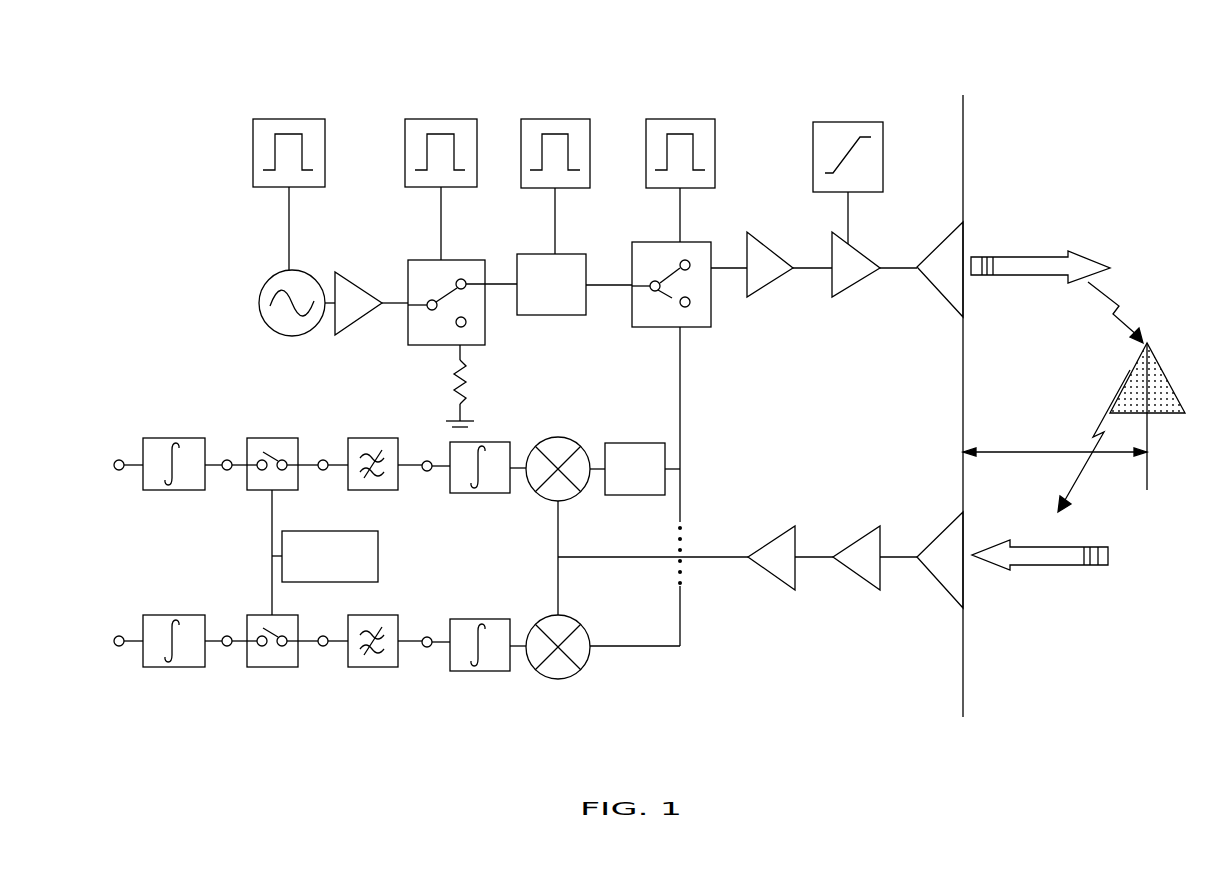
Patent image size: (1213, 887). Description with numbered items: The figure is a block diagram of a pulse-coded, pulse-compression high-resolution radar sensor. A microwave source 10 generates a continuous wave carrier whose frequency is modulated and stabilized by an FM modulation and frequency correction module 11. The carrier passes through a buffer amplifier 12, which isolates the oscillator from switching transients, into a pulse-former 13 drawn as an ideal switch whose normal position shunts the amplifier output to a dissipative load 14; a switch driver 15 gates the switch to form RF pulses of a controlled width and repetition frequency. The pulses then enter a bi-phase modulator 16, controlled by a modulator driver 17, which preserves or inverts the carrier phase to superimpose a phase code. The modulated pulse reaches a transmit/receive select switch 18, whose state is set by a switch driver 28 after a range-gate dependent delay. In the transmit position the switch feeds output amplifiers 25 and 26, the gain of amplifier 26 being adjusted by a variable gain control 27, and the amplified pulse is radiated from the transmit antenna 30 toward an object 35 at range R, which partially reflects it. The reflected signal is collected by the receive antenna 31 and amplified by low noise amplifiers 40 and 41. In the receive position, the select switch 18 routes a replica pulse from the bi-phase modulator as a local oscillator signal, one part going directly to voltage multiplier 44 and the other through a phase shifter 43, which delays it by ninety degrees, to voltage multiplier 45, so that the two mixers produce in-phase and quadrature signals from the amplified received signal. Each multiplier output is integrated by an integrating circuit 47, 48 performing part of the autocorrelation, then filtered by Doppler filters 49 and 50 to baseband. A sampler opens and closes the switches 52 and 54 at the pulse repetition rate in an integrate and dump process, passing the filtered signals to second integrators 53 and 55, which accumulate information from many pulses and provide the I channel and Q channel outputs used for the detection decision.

The microwave source 10 is at (258, 293).
The FM modulation and frequency correction module 11 is at (293, 118).
The buffer amplifier 12 is at (334, 324).
The pulse-former 13 is at (406, 284).
The dissipative load 14 is at (412, 346).
The switch driver 15 is at (445, 118).
The bi-phase modulator 16 is at (570, 316).
The modulator driver 17 is at (562, 118).
The transmit/receive select switch 18 is at (700, 328).
The output amplifier 25 is at (786, 262).
The output amplifier 26 is at (866, 278).
The variable gain control 27 is at (864, 121).
The switch driver 28 is at (707, 118).
The transmit antenna 30 is at (965, 236).
The receive antenna 31 is at (965, 526).
The object 35 is at (1153, 348).
The low noise amplifier 40 is at (860, 538).
The low noise amplifier 41 is at (764, 572).
The phase shifter 43 is at (667, 483).
The voltage multiplier 44 is at (574, 673).
The voltage multiplier 45 is at (576, 496).
The integrating circuit 47 is at (498, 494).
The integrating circuit 48 is at (497, 672).
The Doppler filter 49 is at (360, 492).
The Doppler filter 50 is at (372, 668).
The input switch 52 is at (272, 668).
The second integrator 53 is at (179, 668).
The switch 54 is at (263, 492).
The second integrator 55 is at (178, 530).